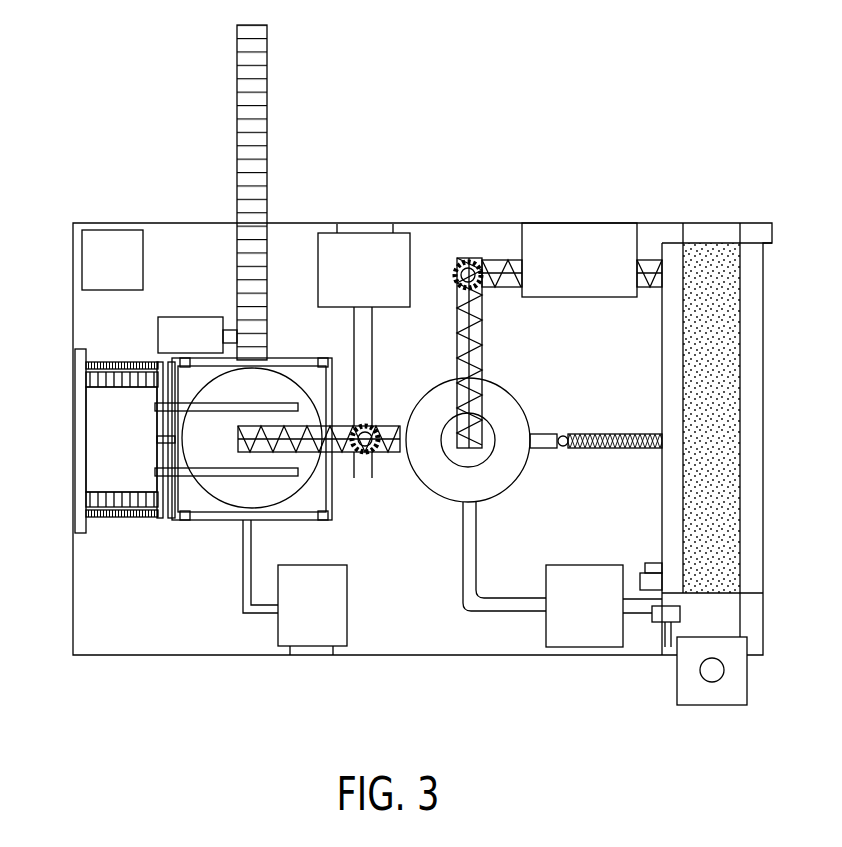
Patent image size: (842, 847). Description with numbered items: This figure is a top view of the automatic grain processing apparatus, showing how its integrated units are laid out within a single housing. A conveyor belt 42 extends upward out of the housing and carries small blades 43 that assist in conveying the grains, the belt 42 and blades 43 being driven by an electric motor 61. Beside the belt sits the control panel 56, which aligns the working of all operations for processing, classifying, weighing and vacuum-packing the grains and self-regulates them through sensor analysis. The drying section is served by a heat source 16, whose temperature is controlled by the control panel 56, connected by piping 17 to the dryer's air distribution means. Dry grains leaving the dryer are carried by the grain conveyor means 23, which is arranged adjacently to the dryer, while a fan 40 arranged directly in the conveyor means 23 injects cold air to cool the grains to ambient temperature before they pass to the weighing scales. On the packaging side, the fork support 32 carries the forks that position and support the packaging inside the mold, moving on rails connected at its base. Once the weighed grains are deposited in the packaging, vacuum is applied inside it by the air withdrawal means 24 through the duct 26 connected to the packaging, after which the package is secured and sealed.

The heat source 16 is at (574, 619).
The piping 17 is at (490, 605).
The grain conveyor means 23 is at (481, 262).
The air withdrawal means 24 is at (302, 619).
The duct 26 is at (243, 600).
The fork support 32 is at (78, 522).
The fan 40 is at (353, 285).
The conveyor belt 42 is at (267, 115).
The small blades 43 is at (260, 72).
The control panel 56 is at (104, 229).
The electric motor 61 is at (188, 315).